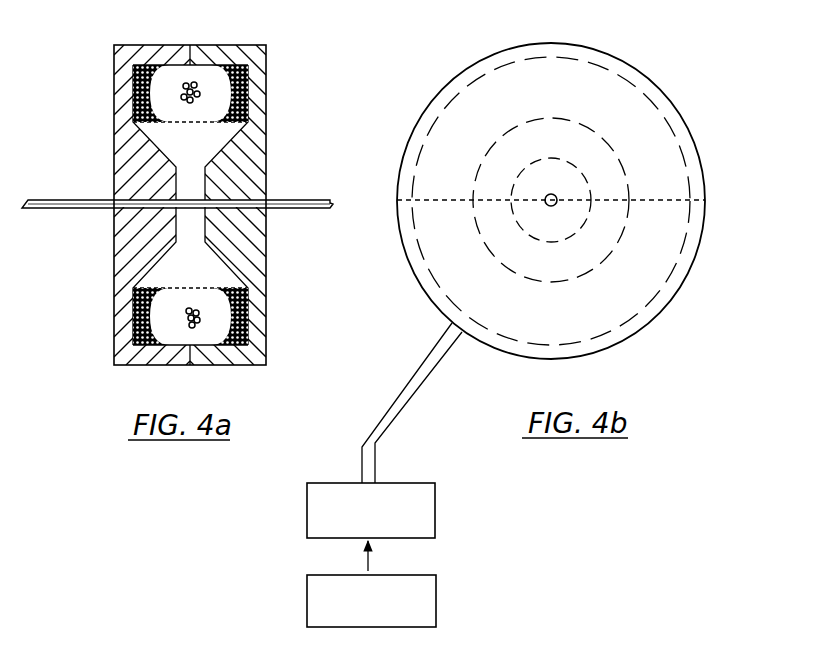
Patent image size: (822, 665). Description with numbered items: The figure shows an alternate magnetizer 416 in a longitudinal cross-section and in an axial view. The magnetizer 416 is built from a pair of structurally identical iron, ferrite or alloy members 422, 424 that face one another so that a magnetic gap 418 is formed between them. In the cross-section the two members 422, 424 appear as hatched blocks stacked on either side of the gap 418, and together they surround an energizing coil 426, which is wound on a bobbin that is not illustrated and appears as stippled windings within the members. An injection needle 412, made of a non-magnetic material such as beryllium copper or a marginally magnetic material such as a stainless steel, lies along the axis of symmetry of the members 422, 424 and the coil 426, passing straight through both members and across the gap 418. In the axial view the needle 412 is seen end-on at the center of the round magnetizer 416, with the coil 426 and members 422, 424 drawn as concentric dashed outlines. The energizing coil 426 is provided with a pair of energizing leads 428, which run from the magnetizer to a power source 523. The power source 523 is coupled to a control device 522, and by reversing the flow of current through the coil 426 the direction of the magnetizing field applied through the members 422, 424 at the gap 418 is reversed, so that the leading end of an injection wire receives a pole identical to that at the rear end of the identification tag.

In FIG. 4a, the injection needle 412 is at (74, 199).
In FIG. 4b, the injection needle 412 is at (558, 196).
In FIG. 4a, the magnetizer 416 is at (270, 370).
In FIG. 4b, the magnetizer 416 is at (666, 317).
In FIG. 4a, the magnetic gap 418 is at (188, 180).
In FIG. 4a, the member 422 is at (112, 249).
In FIG. 4b, the member 422 is at (413, 273).
In FIG. 4a, the member 424 is at (269, 153).
In FIG. 4b, the member 424 is at (457, 79).
In FIG. 4a, the energizing coil 426 is at (244, 88).
In FIG. 4b, the energizing leads 428 is at (368, 441).
In FIG. 4b, the control device 522 is at (437, 600).
In FIG. 4b, the power source 523 is at (436, 512).